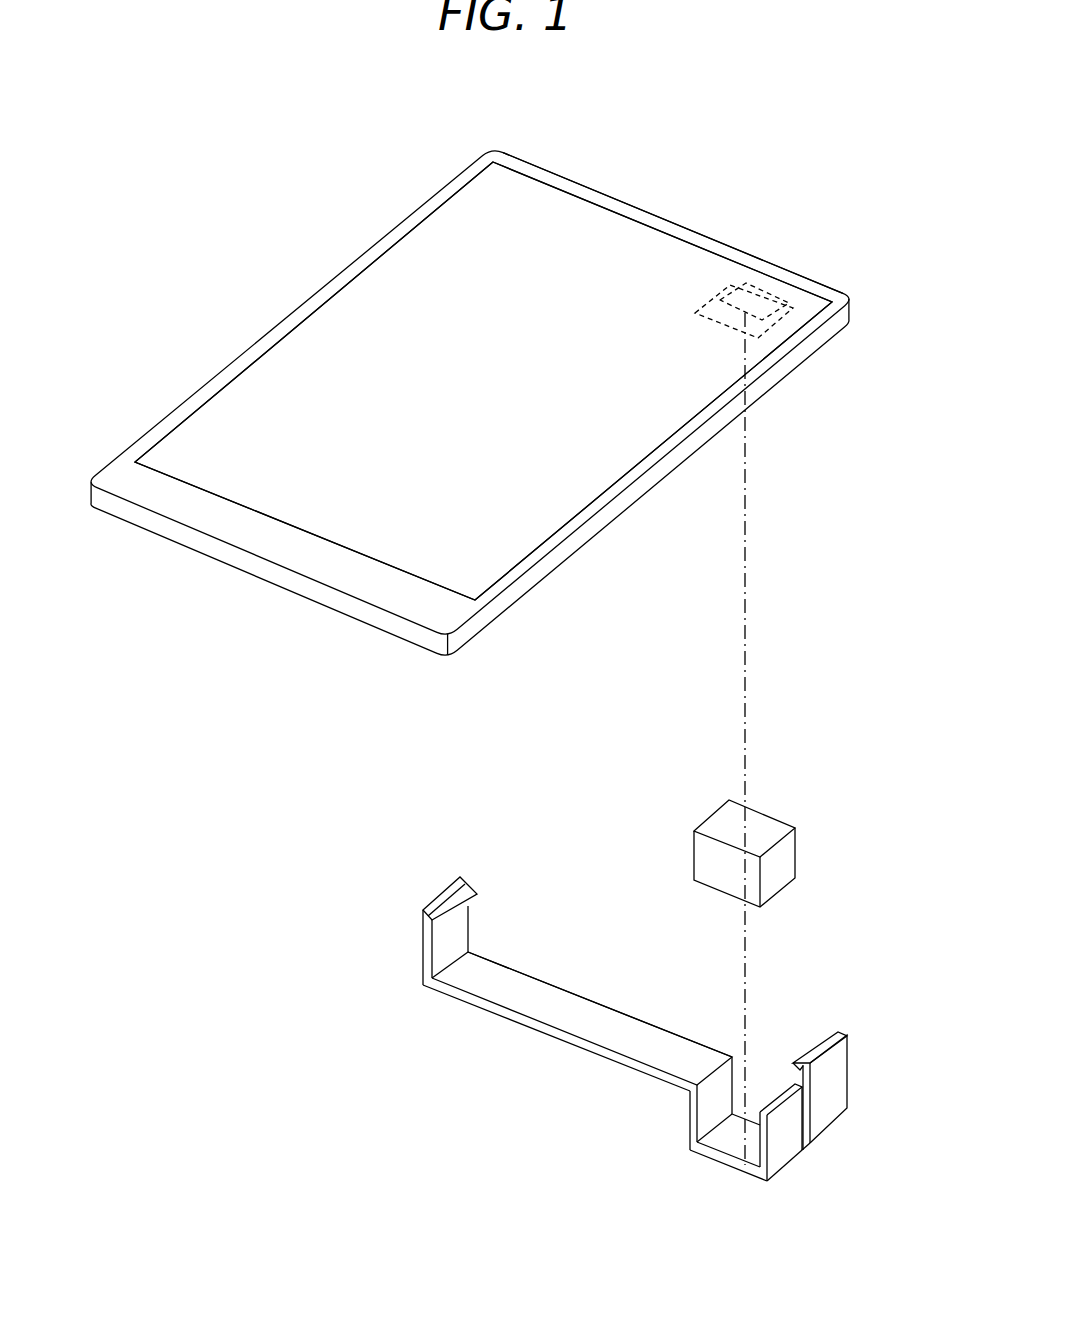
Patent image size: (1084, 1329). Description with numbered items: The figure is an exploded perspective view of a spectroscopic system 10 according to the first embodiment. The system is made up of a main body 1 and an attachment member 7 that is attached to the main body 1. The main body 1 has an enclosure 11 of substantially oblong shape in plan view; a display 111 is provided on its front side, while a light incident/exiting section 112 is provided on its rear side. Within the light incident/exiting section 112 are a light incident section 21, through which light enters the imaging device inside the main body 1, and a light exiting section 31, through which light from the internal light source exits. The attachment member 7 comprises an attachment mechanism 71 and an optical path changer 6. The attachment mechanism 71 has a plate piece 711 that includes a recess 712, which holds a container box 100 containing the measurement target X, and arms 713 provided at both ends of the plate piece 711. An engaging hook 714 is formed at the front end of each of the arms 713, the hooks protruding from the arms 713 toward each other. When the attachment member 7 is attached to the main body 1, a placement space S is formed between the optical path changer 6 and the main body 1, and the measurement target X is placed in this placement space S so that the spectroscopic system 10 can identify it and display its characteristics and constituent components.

The main body 1 is at (539, 166).
The spectroscopic system 10 is at (786, 169).
The enclosure 11 is at (664, 479).
The display 111 is at (557, 215).
The light incident/exiting section 112 is at (762, 300).
The light incident section 21 is at (785, 268).
The light exiting section 31 is at (722, 283).
The measurement target X is at (775, 867).
The container box 100 is at (762, 813).
The attachment member 7 is at (634, 1055).
The attachment mechanism 71 is at (587, 827).
The plate piece 711 is at (613, 1028).
The recess 712 is at (713, 1098).
The arms 713 is at (450, 937).
The engaging hook 714 is at (805, 1050).
The optical path changer 6 is at (743, 1156).
The placement space S is at (718, 1141).